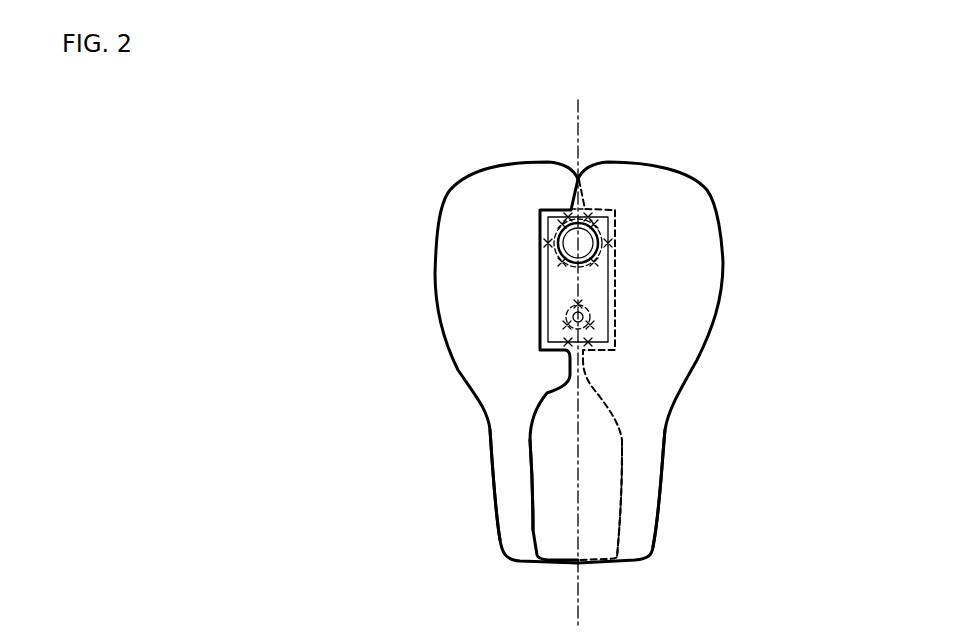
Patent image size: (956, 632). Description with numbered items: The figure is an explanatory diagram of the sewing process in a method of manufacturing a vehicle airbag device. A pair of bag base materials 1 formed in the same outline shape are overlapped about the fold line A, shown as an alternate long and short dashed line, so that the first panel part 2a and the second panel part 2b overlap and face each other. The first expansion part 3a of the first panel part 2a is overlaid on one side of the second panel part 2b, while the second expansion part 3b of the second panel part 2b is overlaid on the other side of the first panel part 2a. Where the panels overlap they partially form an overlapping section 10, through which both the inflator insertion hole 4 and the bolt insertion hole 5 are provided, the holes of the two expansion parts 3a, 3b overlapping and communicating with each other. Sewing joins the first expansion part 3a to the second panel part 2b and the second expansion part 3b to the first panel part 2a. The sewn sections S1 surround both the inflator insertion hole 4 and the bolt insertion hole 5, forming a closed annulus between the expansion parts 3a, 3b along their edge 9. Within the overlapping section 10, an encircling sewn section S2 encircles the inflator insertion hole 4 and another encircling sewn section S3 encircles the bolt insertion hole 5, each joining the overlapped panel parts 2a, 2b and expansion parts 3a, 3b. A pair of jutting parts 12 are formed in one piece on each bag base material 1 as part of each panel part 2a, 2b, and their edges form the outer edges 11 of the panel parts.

The bag base material 1 is at (729, 197).
The first panel part 2a is at (445, 275).
The second panel part 2b is at (702, 330).
The first expansion part 3a is at (605, 207).
The second expansion part 3b is at (552, 207).
The inflator insertion hole 4 is at (569, 254).
The bolt insertion hole 5 is at (590, 312).
The edge 9 is at (615, 256).
The overlapping section 10 is at (598, 196).
The outer edge 11 is at (663, 428).
The jutting part 12 is at (622, 498).
The sewn section S1 is at (546, 246).
The encircling sewn section S2 is at (600, 233).
The encircling sewn section S3 is at (566, 321).
The fold line A is at (578, 603).